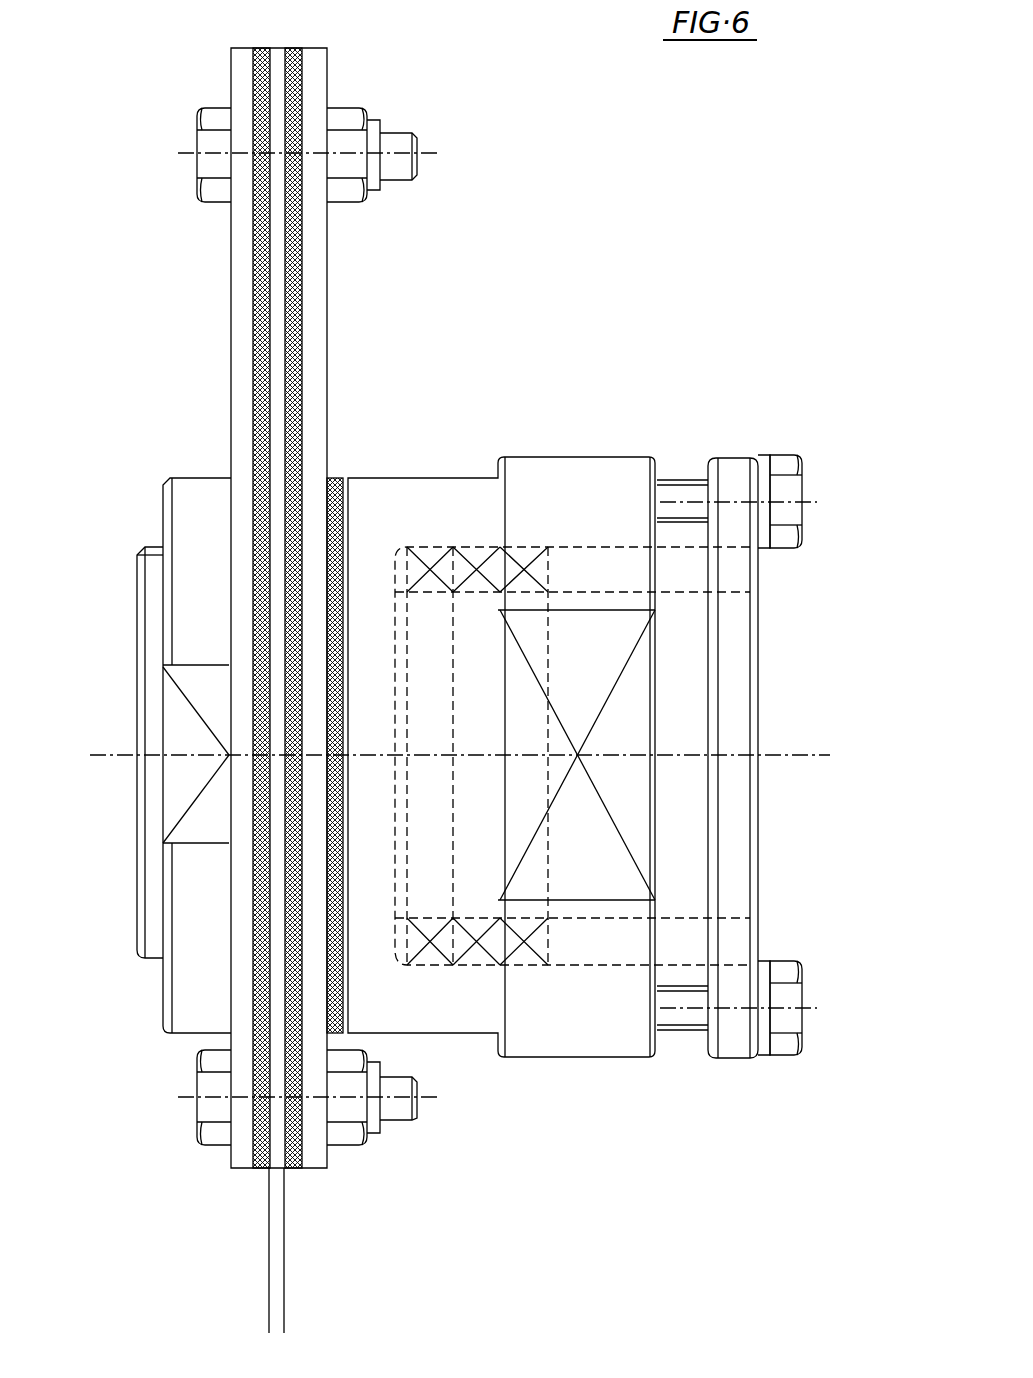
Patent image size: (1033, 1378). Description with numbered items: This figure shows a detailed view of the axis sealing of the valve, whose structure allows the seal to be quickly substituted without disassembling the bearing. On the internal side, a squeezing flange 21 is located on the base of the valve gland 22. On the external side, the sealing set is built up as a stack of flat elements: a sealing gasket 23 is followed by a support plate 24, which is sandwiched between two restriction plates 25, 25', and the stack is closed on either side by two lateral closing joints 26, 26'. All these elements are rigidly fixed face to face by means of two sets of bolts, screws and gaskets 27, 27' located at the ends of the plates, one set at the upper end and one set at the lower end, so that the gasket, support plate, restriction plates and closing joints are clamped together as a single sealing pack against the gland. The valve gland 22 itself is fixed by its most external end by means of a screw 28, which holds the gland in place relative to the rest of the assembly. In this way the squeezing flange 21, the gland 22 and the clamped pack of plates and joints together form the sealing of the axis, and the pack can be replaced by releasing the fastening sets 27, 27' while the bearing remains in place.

The squeezing flange 21 is at (735, 700).
The valve gland 22 is at (583, 470).
The sealing gasket 23 is at (342, 475).
The support plate 24 is at (275, 280).
The restriction plate 25 is at (368, 608).
The restriction plate 25' is at (334, 608).
The lateral closing joint 26 is at (380, 608).
The lateral closing joint 26' is at (368, 608).
The set of bolts, screws and gaskets 27 is at (321, 126).
The set of bolts, screws and gaskets 27' is at (320, 1137).
The screw 28 is at (180, 715).